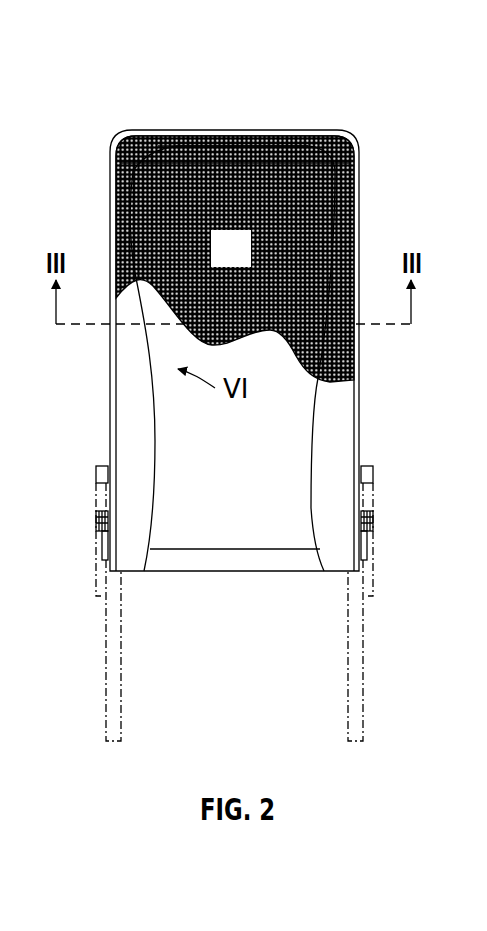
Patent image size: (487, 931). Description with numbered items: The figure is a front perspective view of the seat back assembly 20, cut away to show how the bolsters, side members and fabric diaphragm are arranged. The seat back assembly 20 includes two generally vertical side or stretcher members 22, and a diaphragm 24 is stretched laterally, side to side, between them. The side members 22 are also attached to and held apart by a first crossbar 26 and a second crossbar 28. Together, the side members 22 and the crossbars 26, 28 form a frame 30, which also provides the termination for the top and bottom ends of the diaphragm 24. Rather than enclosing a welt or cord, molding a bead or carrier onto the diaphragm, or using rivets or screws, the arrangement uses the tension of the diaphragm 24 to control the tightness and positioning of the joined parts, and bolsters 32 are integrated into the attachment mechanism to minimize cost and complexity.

The seat back assembly 20 is at (143, 100).
The side members 22 is at (352, 206).
The diaphragm 24 is at (236, 255).
The first crossbar 26 is at (229, 122).
The second crossbar 28 is at (228, 552).
The frame 30 is at (352, 124).
The bolsters 32 is at (333, 451).